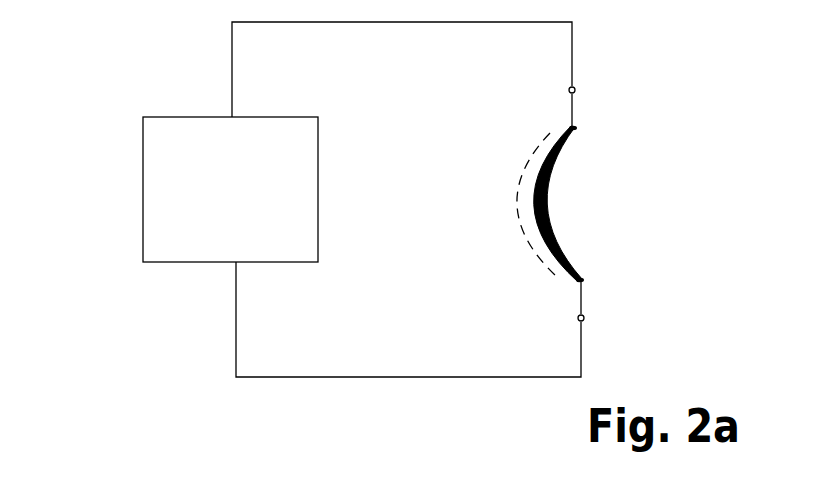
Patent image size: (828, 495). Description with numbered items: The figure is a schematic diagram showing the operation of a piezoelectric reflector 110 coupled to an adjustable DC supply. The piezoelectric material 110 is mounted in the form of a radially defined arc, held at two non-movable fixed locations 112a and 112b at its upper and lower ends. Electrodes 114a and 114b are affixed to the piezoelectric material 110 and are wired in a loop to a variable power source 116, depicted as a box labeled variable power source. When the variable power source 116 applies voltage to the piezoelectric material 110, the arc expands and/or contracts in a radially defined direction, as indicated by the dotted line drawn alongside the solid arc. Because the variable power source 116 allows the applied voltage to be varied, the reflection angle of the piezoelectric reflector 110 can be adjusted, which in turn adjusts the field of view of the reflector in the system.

The piezoelectric reflector 110 is at (546, 202).
The non-movable fixed location 112a is at (557, 127).
The non-movable fixed location 112b is at (566, 283).
The electrode 114a is at (575, 89).
The electrode 114b is at (587, 316).
The variable power source 116 is at (143, 165).